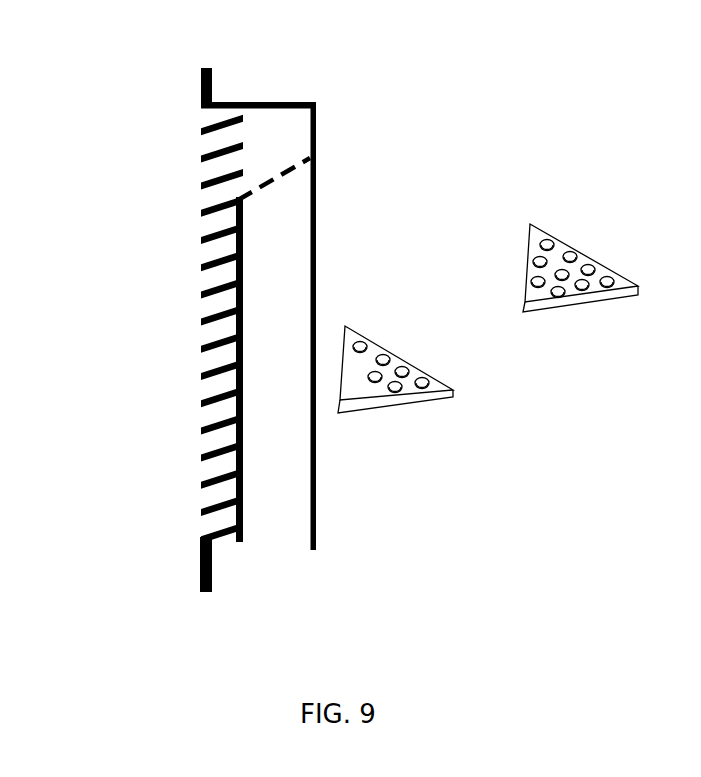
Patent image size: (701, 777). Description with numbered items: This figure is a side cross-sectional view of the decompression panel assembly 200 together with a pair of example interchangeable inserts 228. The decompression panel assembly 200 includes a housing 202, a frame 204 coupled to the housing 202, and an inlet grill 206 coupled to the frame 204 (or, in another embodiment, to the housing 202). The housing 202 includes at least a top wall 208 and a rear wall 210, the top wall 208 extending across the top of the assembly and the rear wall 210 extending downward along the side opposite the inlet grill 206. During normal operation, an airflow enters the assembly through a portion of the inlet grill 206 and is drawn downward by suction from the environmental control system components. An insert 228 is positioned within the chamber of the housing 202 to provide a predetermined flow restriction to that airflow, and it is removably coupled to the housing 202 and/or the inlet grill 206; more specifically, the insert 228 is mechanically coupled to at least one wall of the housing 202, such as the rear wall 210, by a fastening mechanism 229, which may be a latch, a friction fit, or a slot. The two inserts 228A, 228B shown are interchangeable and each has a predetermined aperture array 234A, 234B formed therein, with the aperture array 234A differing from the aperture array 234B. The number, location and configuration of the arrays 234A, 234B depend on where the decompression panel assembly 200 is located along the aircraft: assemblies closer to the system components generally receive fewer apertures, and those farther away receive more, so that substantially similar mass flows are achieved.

The decompression panel assembly 200 is at (86, 56).
The housing 202 is at (291, 94).
The frame 204 is at (201, 82).
The inlet grill 206 is at (183, 346).
The top wall 208 is at (260, 102).
The rear wall 210 is at (316, 120).
The fastening mechanism 229 is at (318, 157).
The insert 228 is at (466, 391).
The first interchangeable insert 228A is at (353, 392).
The second interchangeable insert 228B is at (519, 251).
The first aperture array 234A is at (390, 339).
The second aperture array 234B is at (579, 238).